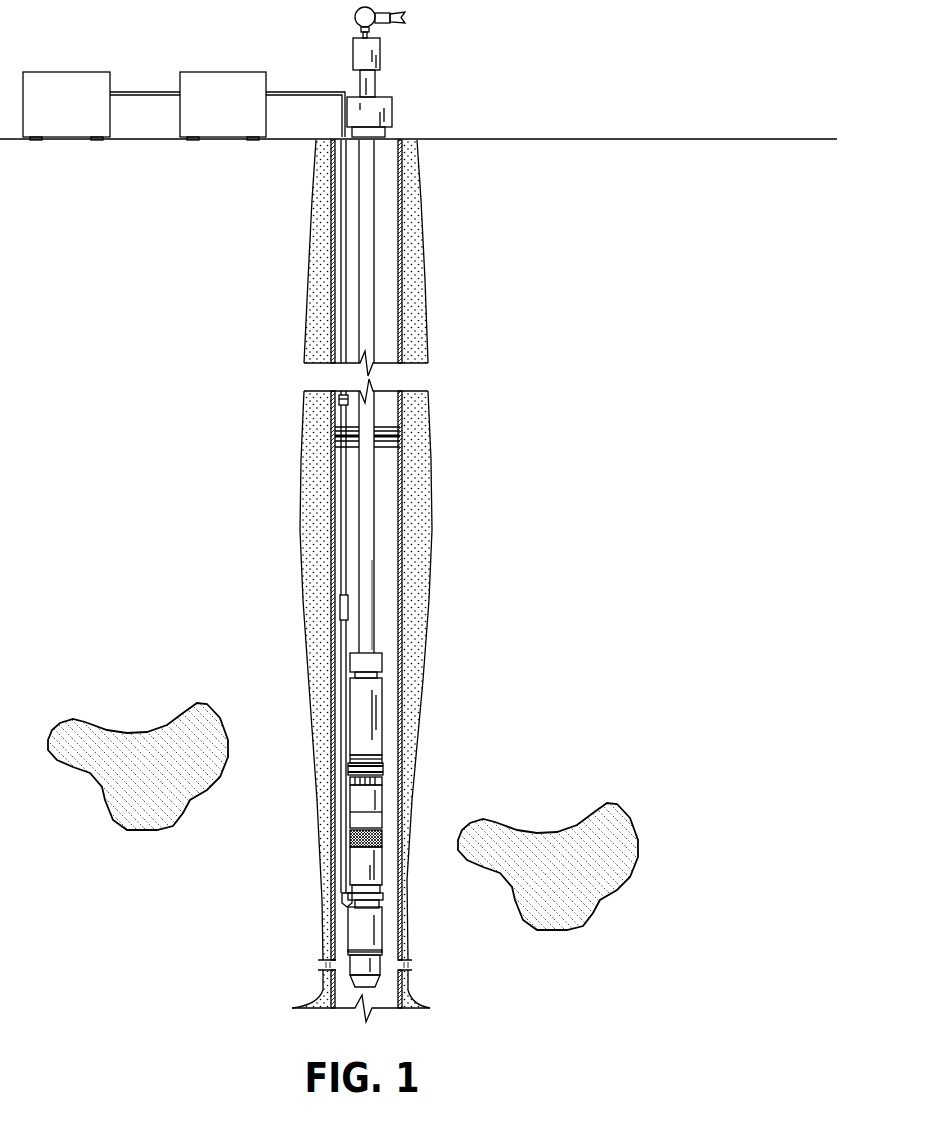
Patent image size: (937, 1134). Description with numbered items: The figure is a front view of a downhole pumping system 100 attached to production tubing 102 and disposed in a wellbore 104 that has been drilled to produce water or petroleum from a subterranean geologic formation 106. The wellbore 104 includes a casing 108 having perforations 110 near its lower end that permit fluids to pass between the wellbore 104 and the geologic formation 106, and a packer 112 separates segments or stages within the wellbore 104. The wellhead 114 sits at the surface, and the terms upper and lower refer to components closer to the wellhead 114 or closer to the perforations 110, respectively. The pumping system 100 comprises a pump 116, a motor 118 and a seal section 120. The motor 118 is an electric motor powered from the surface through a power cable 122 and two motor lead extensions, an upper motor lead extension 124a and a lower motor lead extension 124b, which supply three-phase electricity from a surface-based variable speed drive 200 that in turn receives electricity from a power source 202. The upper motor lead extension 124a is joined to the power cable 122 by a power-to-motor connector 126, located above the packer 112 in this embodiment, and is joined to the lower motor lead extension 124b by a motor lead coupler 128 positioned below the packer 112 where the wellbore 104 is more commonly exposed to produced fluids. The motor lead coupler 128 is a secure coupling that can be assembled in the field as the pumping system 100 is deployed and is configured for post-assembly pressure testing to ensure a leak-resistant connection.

The downhole pumping system 100 is at (455, 524).
The production tubing 102 is at (370, 275).
The wellbore 104 is at (390, 205).
The subterranean geologic formation 106 is at (128, 777).
The casing 108 is at (400, 240).
The perforations 110 is at (322, 965).
The packer 112 is at (340, 440).
The wellhead 114 is at (367, 108).
The pump 116 is at (370, 730).
The motor 118 is at (352, 920).
The seal section 120 is at (378, 872).
The power cable 122 is at (345, 318).
The upper motor lead extension 124a is at (345, 510).
The lower motor lead extension 124b is at (345, 660).
The power-to-motor connector 126 is at (343, 398).
The motor lead coupler 128 is at (341, 597).
The variable speed drive 200 is at (207, 115).
The power source 202 is at (52, 115).